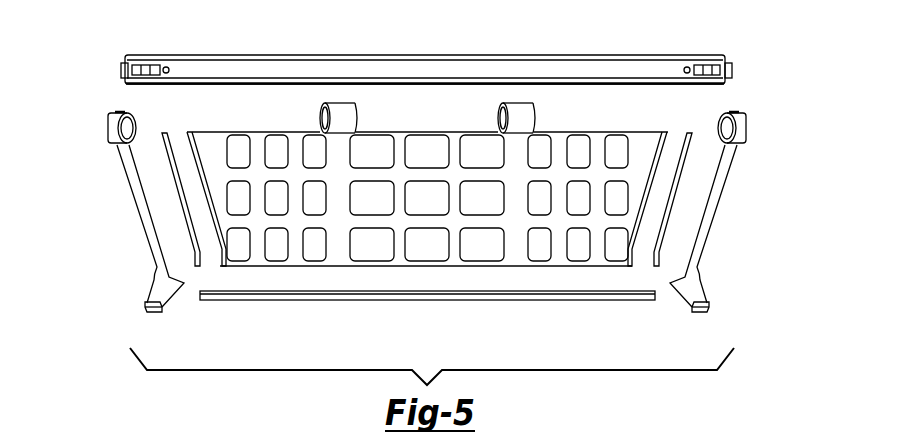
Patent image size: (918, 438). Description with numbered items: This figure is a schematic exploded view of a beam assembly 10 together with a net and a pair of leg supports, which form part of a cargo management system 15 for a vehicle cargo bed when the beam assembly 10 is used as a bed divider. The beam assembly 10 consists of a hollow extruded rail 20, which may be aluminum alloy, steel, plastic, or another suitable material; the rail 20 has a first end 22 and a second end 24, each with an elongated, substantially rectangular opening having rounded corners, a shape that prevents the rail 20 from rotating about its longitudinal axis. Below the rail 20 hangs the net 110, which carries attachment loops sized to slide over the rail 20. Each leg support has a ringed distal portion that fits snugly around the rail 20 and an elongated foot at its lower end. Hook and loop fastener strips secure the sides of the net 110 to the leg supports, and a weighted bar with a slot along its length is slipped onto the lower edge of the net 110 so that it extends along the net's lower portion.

The beam assembly 10 is at (377, 55).
The cargo management system 15 is at (746, 94).
The rail 20 is at (523, 55).
The first end 22 is at (128, 57).
The second end 24 is at (730, 57).
The net 110 is at (343, 228).